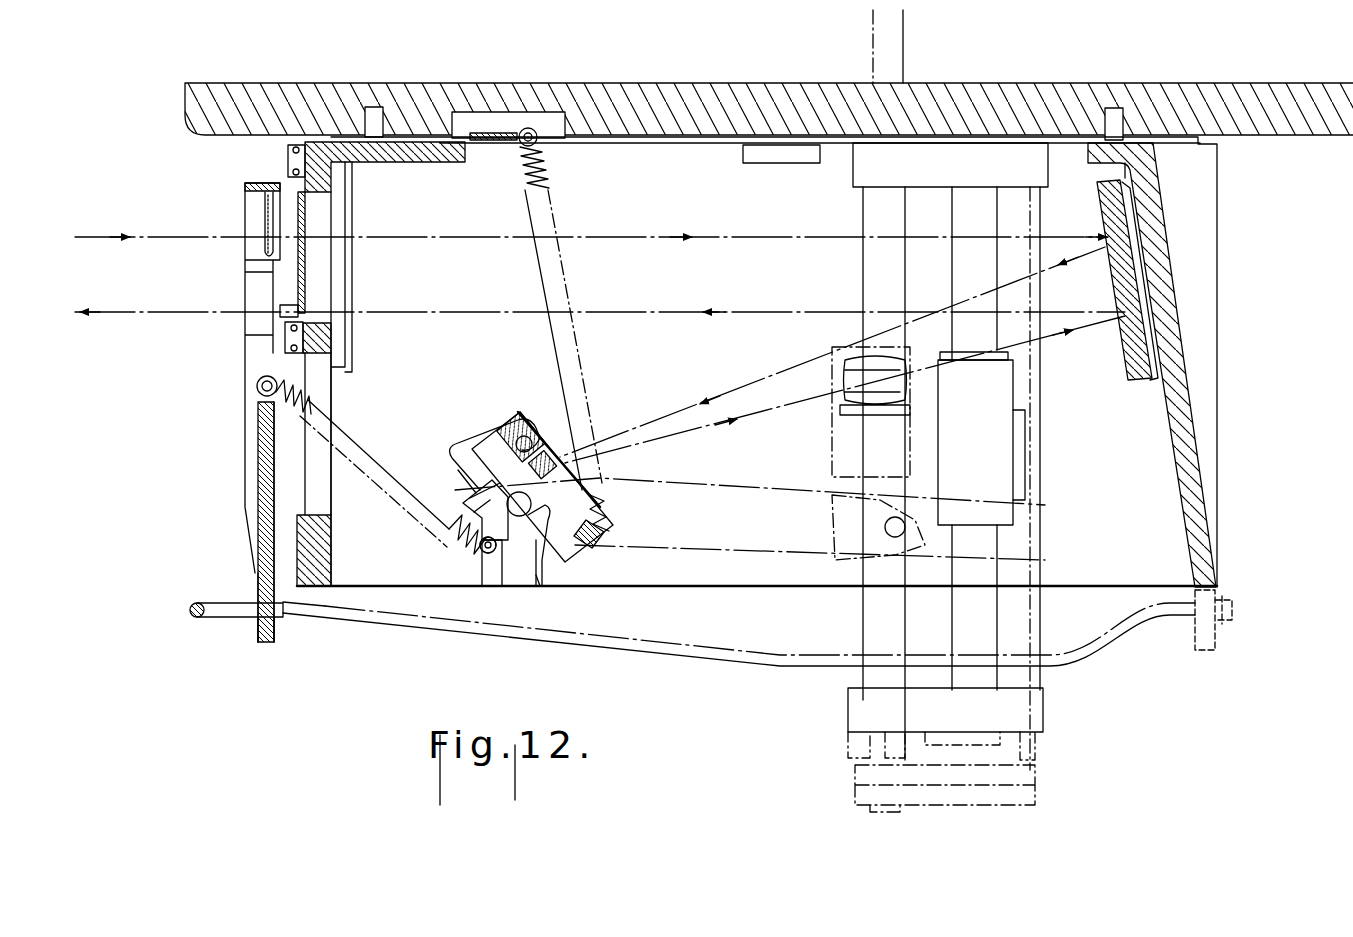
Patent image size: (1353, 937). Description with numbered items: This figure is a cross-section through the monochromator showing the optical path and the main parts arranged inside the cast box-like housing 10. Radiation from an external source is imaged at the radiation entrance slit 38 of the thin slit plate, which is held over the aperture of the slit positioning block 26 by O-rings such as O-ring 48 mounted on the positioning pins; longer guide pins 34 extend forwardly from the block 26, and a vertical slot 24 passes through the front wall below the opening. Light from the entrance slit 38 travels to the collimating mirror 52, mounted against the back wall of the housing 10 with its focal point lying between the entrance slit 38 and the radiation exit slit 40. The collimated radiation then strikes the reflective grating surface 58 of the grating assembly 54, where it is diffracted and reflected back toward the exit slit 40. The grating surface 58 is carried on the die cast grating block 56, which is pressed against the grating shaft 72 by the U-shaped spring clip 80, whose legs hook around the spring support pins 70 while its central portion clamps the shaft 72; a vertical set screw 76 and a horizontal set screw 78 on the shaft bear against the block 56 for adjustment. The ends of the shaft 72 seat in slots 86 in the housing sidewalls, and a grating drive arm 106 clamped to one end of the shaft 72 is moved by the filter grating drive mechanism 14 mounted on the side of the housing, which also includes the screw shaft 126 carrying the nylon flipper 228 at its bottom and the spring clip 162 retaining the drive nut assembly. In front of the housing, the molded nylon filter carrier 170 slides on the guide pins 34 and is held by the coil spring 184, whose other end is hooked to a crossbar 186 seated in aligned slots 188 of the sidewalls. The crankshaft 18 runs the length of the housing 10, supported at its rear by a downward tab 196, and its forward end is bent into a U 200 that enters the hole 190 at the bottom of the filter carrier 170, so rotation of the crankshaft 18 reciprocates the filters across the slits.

The housing 10 is at (1215, 290).
The filter grating drive mechanism 14 is at (1047, 446).
The crankshaft 18 is at (632, 655).
The vertical slot 24 is at (331, 387).
The slit positioning block 26 is at (345, 165).
The guide pins 34 is at (262, 303).
The radiation entrance slit 38 is at (303, 240).
The radiation exit slit 40 is at (305, 312).
The O-ring 48 is at (290, 149).
The collimating mirror 52 is at (1100, 186).
The grating assembly 54 is at (497, 410).
The grating block 56 is at (582, 522).
The reflective grating surface 58 is at (522, 415).
The spring support pins 70 is at (532, 440).
The grating shaft 72 is at (531, 503).
The vertical set screw 76 is at (535, 517).
The horizontal set screw 78 is at (467, 493).
The spring clip 80 is at (452, 456).
The slots 86 is at (546, 565).
The grating drive arm 106 is at (770, 492).
The screw shaft 126 is at (905, 38).
The spring clip 162 is at (830, 378).
The filter carrier 170 is at (245, 472).
The coil spring 184 is at (330, 420).
The crossbar 186 is at (482, 547).
The aligned slots 188 is at (482, 577).
The hole 190 is at (251, 613).
The tab 196 is at (1205, 652).
The U bend 200 is at (197, 603).
The flipper 228 is at (975, 785).